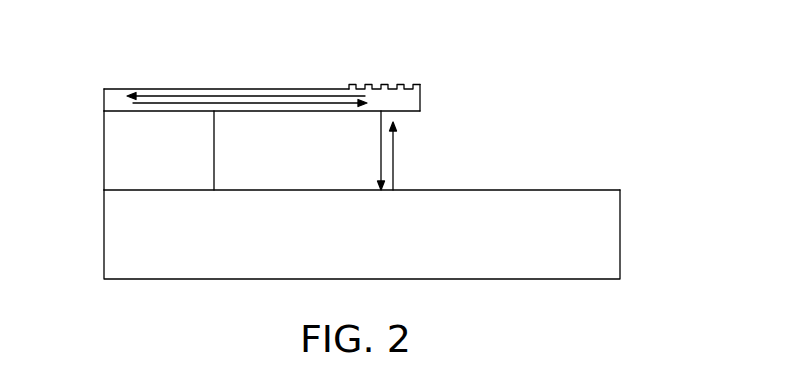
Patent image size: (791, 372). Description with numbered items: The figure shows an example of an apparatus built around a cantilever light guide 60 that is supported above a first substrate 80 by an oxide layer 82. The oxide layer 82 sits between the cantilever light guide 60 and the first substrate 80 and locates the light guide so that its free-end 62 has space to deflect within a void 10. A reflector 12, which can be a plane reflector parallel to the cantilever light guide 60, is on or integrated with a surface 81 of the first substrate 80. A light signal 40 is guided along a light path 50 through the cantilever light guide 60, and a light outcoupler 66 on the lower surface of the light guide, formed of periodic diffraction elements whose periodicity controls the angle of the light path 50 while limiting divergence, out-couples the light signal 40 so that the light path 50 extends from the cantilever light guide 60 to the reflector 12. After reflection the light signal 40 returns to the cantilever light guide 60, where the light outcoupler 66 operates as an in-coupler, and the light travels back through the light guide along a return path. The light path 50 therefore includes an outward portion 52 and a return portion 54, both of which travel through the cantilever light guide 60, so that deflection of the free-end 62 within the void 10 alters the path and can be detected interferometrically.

The void 10 is at (593, 77).
The reflector 12 is at (403, 182).
The light signal 40 is at (232, 95).
The light path 50 is at (286, 89).
The outward portion 52 is at (381, 148).
The return portion 54 is at (368, 97).
The cantilever light guide 60 is at (104, 89).
The free-end 62 is at (422, 97).
The light outcoupler 66 is at (418, 75).
The first substrate 80 is at (103, 260).
The surface of the first substrate 81 is at (565, 190).
The oxide layer 82 is at (118, 156).